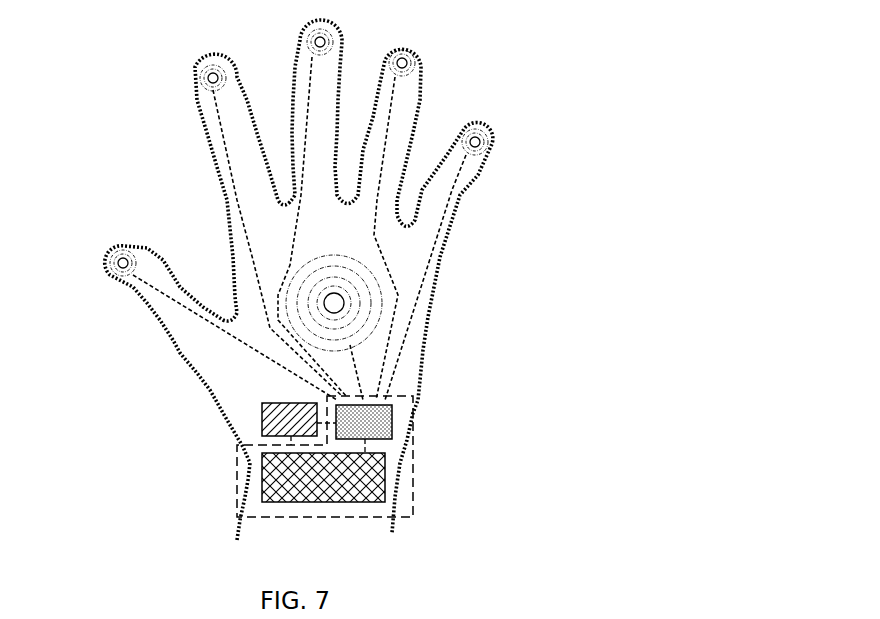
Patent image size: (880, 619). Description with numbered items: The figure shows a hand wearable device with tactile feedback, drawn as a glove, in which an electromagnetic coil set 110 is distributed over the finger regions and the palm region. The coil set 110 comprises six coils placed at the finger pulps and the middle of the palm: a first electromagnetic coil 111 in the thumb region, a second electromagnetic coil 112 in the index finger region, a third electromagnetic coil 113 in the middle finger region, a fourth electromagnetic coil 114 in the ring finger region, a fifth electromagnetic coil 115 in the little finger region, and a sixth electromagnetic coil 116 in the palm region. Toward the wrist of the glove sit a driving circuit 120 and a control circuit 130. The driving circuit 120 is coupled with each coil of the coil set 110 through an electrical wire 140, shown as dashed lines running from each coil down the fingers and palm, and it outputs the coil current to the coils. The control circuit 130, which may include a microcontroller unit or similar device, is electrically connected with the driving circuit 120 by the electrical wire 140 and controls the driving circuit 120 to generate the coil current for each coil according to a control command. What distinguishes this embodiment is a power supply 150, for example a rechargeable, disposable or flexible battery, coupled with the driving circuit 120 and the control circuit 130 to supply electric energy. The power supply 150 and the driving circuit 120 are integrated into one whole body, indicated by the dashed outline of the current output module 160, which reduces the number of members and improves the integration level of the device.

The electromagnetic coil set 110 is at (153, 261).
The first electromagnetic coil 111 is at (118, 247).
The second electromagnetic coil 112 is at (222, 67).
The third electromagnetic coil 113 is at (333, 32).
The fourth electromagnetic coil 114 is at (412, 50).
The fifth electromagnetic coil 115 is at (490, 142).
The sixth electromagnetic coil 116 is at (333, 257).
The driving circuit 120 is at (405, 423).
The control circuit 130 is at (249, 423).
The electrical wire 140 is at (410, 353).
The power supply 150 is at (249, 483).
The current output module 160 is at (426, 483).